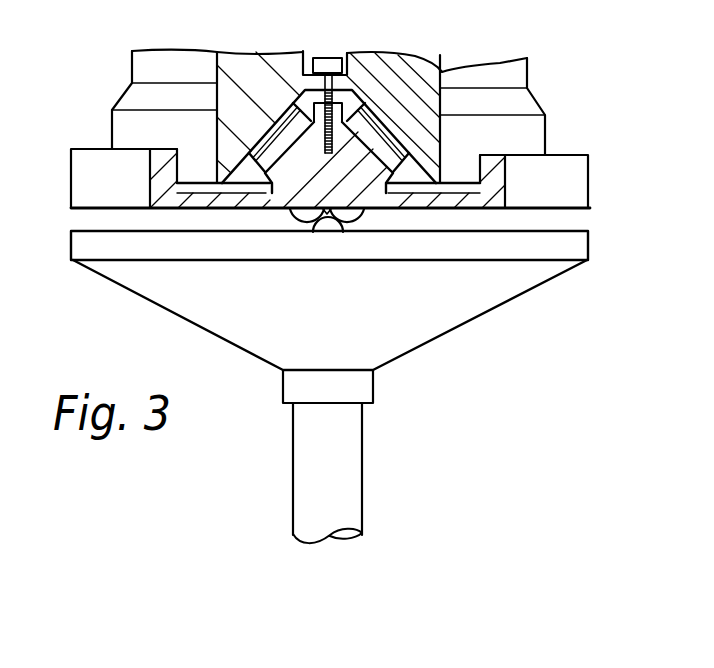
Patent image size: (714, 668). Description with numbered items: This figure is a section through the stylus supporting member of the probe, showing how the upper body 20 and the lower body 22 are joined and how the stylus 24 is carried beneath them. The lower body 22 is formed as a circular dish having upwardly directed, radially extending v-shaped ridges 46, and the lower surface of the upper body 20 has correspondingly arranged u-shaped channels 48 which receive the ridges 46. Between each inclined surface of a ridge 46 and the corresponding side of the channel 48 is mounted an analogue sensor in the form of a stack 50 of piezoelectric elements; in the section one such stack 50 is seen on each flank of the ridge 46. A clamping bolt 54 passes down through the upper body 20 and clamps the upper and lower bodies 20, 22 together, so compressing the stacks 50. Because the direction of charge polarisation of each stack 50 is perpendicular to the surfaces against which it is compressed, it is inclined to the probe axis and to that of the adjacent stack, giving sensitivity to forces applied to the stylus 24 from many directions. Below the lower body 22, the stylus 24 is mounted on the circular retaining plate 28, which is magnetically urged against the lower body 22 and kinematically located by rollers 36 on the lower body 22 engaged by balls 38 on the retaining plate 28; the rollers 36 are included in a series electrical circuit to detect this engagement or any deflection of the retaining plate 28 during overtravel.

The upper body 20 is at (512, 82).
The lower body 22 is at (588, 187).
The stylus 24 is at (347, 487).
The retaining plate 28 is at (517, 287).
The rollers 36 is at (337, 229).
The balls 38 is at (303, 215).
The v-shaped ridges 46 is at (352, 190).
The u-shaped channels 48 is at (358, 98).
The stack of piezoelectric elements 50 is at (282, 113).
The clamping bolt 54 is at (327, 62).